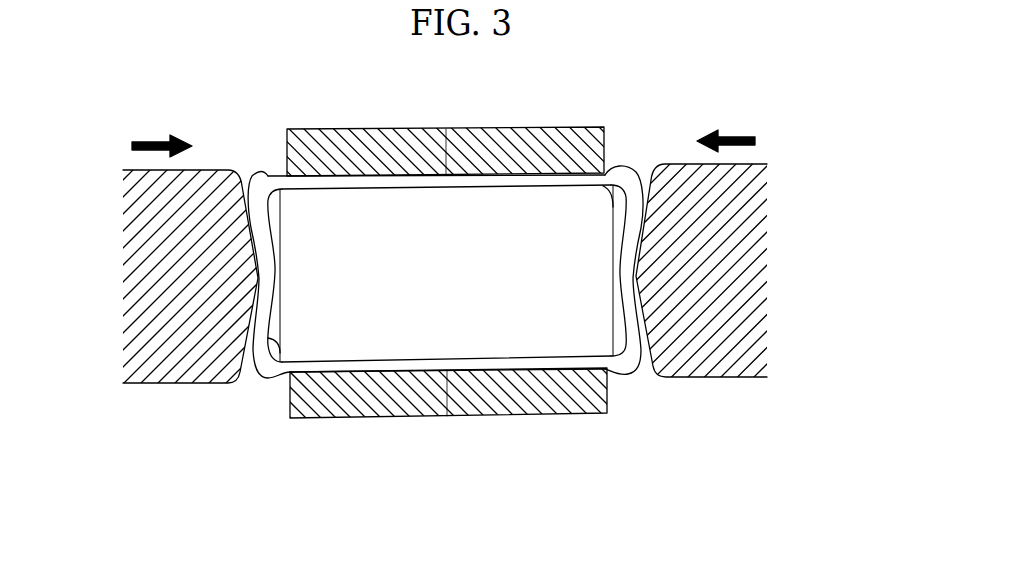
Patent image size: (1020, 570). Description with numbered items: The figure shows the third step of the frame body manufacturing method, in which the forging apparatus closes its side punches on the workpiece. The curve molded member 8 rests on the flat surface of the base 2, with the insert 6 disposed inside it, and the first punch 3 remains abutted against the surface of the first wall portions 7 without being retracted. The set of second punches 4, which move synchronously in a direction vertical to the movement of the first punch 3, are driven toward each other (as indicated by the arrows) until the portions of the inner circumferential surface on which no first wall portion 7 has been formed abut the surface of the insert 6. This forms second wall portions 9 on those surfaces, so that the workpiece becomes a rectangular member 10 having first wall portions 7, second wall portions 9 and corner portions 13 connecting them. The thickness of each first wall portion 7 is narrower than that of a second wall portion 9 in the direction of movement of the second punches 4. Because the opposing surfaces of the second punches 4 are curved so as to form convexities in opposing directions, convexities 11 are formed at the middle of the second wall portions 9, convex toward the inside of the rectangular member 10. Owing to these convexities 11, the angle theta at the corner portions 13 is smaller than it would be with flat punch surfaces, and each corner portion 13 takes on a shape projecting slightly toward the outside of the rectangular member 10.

The base 2 is at (563, 403).
The first punch 3 is at (528, 155).
The second punches 4 is at (172, 367).
The insert 6 is at (460, 279).
The first wall portions 7 is at (373, 178).
The curve molded member 8 is at (618, 150).
The second wall portions 9 is at (249, 181).
The rectangular member 10 is at (618, 150).
The convexities 11 is at (270, 273).
The corner portions 13 is at (267, 185).